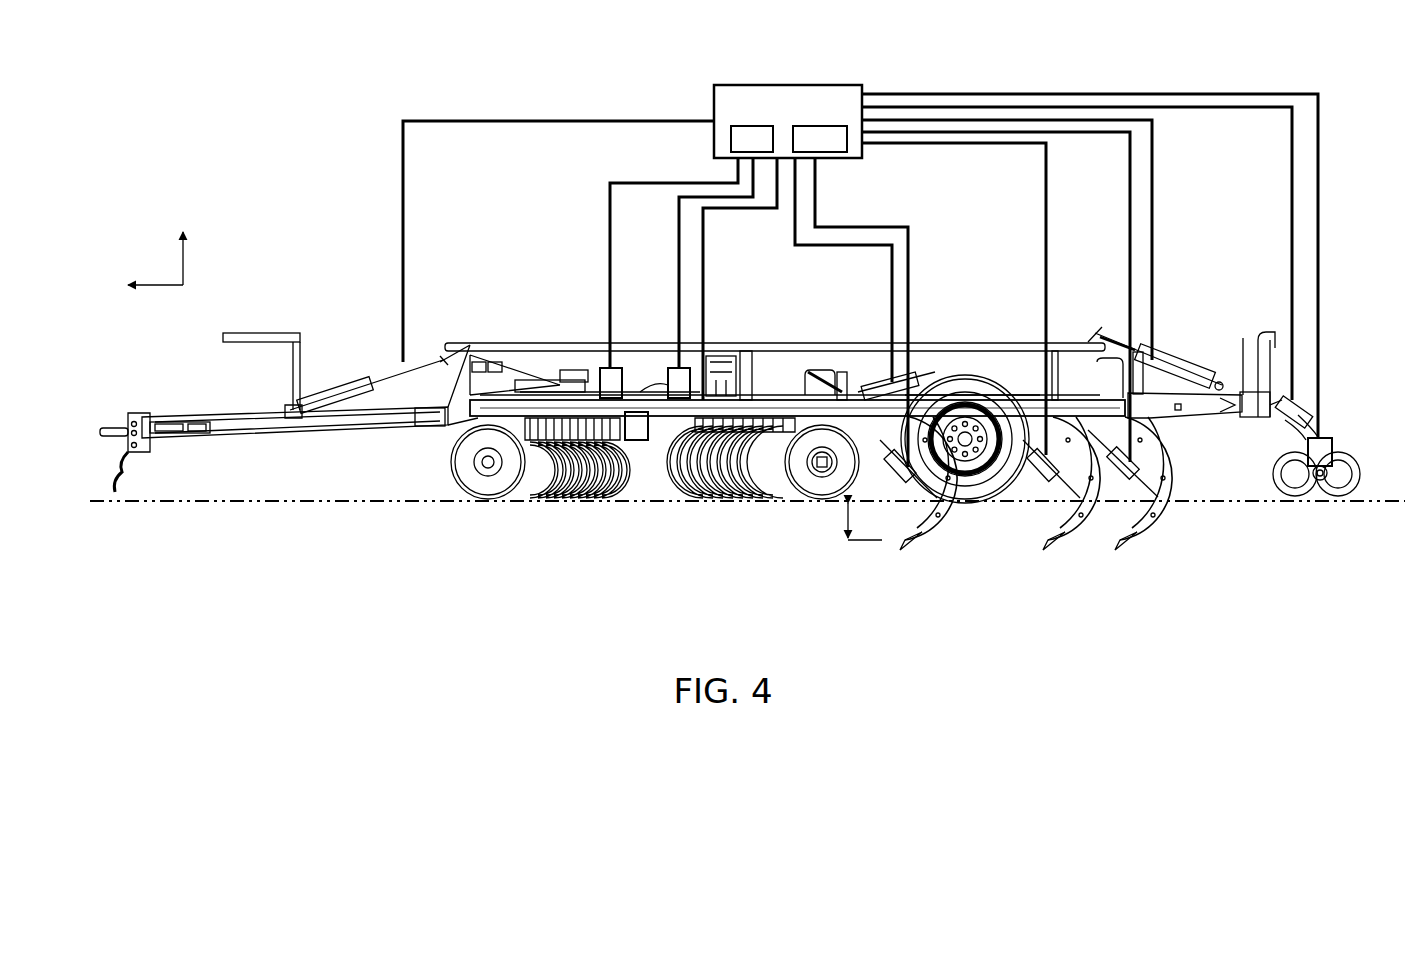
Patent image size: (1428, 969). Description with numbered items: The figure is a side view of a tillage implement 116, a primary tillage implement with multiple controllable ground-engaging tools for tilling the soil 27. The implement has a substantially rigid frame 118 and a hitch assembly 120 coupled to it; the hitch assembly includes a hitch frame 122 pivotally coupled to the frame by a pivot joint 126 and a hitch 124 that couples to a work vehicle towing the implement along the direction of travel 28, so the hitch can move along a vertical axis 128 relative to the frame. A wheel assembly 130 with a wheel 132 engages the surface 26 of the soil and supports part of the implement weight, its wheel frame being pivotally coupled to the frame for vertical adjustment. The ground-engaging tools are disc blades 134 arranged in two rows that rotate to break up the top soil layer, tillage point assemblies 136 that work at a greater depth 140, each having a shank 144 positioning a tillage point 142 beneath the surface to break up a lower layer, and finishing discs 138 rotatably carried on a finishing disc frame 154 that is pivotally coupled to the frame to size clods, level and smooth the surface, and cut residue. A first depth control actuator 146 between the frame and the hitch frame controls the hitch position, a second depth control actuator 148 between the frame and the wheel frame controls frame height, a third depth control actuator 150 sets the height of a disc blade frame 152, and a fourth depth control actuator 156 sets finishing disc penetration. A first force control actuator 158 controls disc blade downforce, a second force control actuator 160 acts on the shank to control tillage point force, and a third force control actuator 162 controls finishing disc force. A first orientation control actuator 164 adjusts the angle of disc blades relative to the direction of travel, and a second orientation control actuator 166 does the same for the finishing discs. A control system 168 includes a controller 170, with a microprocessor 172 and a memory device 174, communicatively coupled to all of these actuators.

The surface 26 is at (195, 500).
The soil 27 is at (312, 545).
The direction of travel 28 is at (176, 283).
The vertical axis 128 is at (186, 276).
The tillage implement 116 is at (325, 182).
The frame 118 is at (780, 355).
The hitch assembly 120 is at (178, 373).
The hitch frame 122 is at (248, 418).
The hitch 124 is at (128, 422).
The pivot joint 126 is at (445, 435).
The wheel assembly 130 is at (968, 332).
The wheel 132 is at (975, 375).
The disc blades 134 is at (530, 537).
The tillage point assembly 136 is at (930, 562).
The finishing discs 138 is at (1350, 517).
The depth 140 is at (845, 522).
The tillage point 142 is at (900, 546).
The shank 144 is at (945, 510).
The first depth control actuator 146 is at (340, 385).
The second depth control actuator 148 is at (875, 375).
The third depth control actuator 150 is at (608, 368).
The disc blade frame 152 is at (762, 416).
The finishing disc frame 154 is at (1187, 412).
The fourth depth control actuator 156 is at (1160, 354).
The first force control actuator 158 is at (675, 368).
The second force control actuator 160 is at (893, 478).
The third force control actuator 162 is at (1278, 428).
The first orientation control actuator 164 is at (640, 441).
The second orientation control actuator 166 is at (1336, 448).
The control system 168 is at (872, 64).
The controller 170 is at (735, 86).
The microprocessor 172 is at (731, 138).
The memory device 174 is at (835, 160).